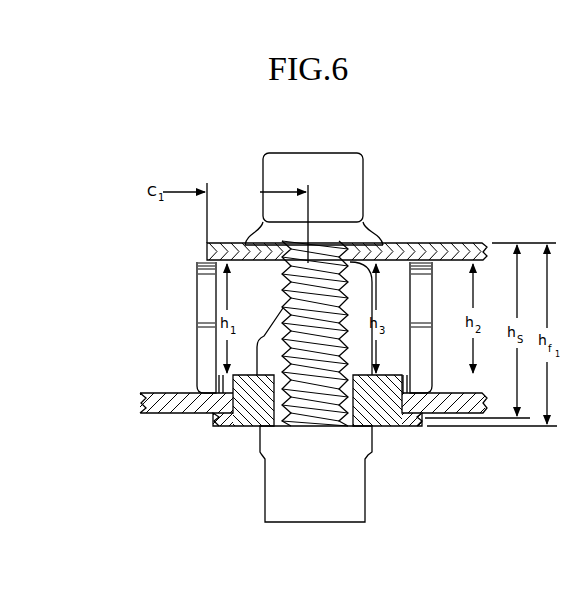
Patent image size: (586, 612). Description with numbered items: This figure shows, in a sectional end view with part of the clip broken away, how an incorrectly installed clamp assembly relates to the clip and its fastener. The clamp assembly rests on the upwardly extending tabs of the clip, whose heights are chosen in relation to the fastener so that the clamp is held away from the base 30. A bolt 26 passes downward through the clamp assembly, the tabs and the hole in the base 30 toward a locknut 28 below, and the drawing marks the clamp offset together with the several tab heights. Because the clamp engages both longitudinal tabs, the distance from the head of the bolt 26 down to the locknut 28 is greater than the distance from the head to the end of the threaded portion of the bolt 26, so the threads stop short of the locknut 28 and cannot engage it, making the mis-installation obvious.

The bolt 26 is at (259, 170).
The locknut 28 is at (325, 504).
The base 30 is at (141, 402).